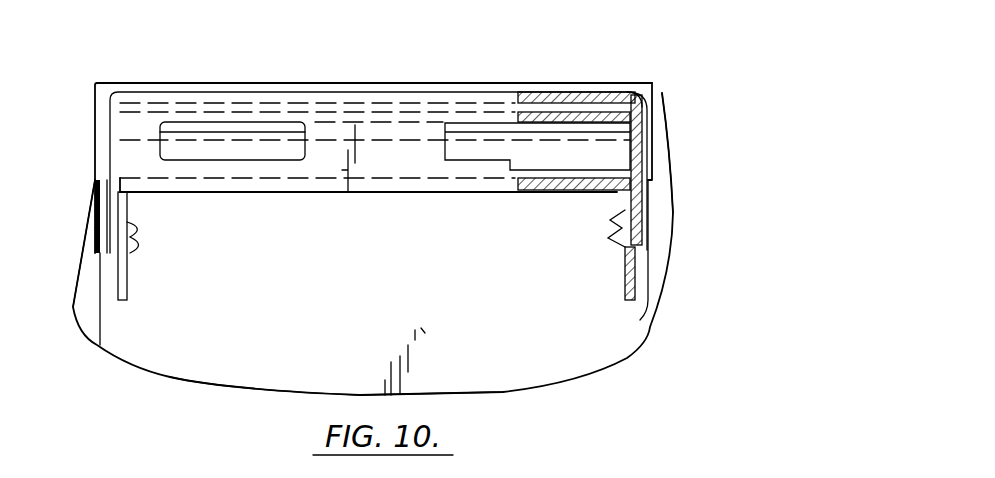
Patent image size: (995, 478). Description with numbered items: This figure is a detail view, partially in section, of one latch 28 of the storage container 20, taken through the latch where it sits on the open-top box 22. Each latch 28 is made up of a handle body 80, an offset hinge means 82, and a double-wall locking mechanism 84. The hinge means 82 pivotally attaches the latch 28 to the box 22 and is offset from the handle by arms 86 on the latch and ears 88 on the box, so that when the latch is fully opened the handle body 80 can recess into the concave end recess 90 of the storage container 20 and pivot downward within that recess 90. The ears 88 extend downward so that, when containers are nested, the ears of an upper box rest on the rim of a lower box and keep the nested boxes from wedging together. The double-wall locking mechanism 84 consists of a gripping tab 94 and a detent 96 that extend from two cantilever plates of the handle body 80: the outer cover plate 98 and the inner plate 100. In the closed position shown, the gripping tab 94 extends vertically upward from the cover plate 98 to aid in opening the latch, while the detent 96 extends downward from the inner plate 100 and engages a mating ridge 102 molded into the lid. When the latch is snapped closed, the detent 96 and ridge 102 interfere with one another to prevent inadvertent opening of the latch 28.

The storage container 20 is at (505, 393).
The open-top box 22 is at (170, 386).
The latch 28 is at (377, 214).
The handle body 80 is at (330, 198).
The offset hinge means 82 is at (140, 246).
The double-wall locking mechanism 84 is at (391, 80).
The arms 86 is at (102, 258).
The ears 88 is at (128, 301).
The end recess 90 is at (266, 345).
The gripping tab 94 is at (264, 90).
The detent 96 is at (493, 130).
The cover plate 98 is at (583, 97).
The inner plate 100 is at (545, 115).
The ridge 102 is at (575, 135).